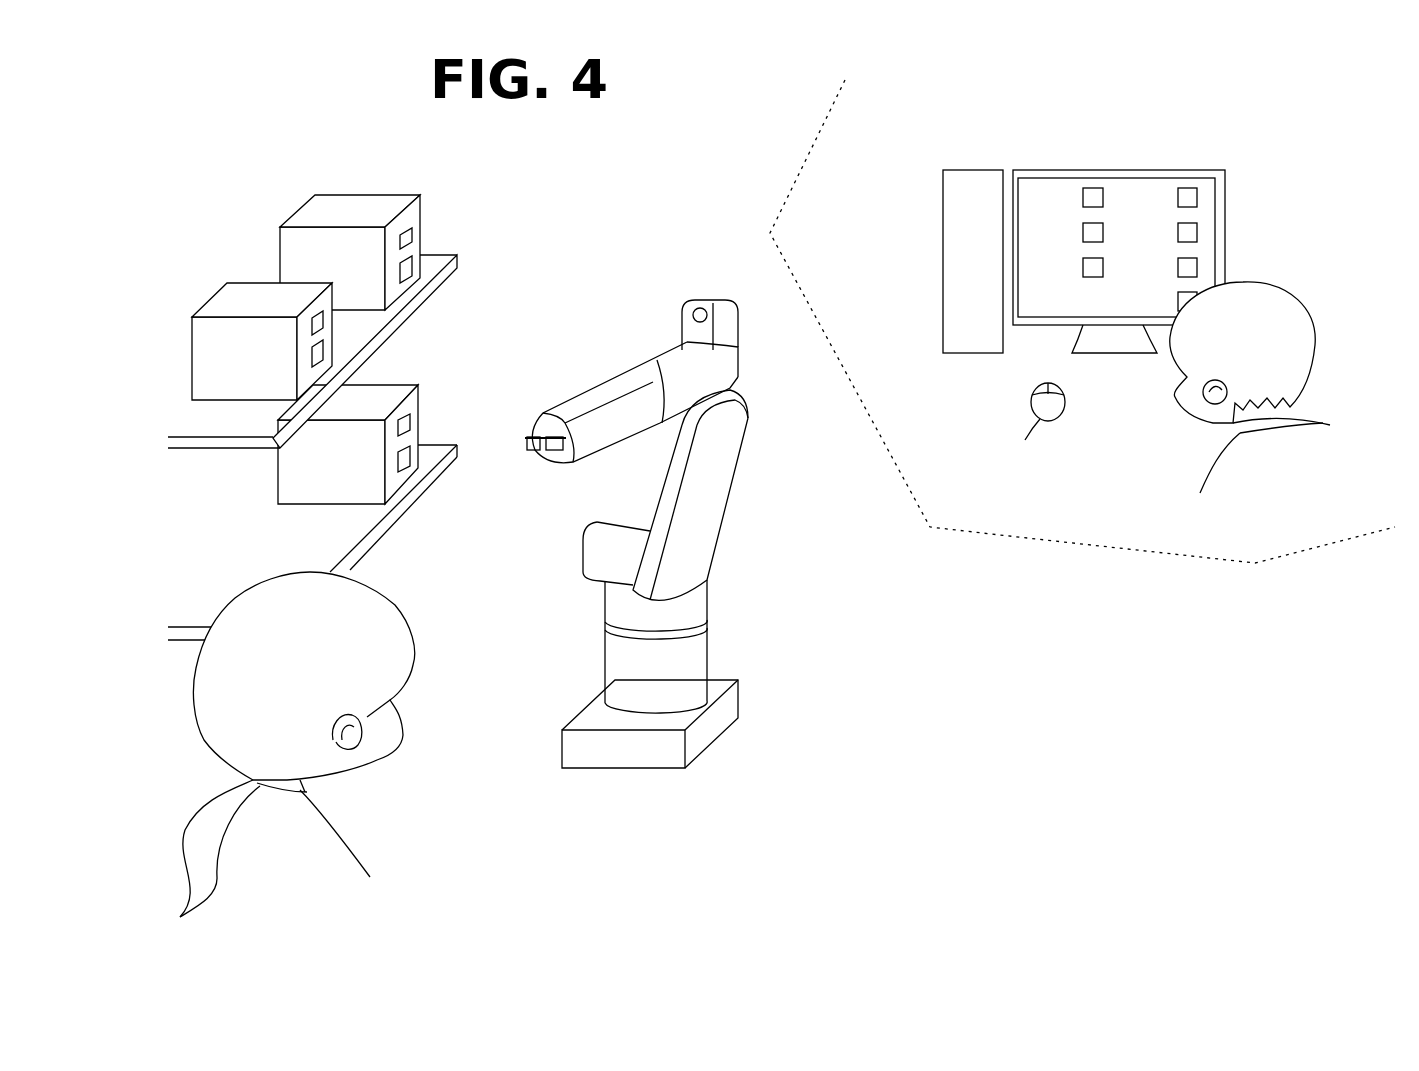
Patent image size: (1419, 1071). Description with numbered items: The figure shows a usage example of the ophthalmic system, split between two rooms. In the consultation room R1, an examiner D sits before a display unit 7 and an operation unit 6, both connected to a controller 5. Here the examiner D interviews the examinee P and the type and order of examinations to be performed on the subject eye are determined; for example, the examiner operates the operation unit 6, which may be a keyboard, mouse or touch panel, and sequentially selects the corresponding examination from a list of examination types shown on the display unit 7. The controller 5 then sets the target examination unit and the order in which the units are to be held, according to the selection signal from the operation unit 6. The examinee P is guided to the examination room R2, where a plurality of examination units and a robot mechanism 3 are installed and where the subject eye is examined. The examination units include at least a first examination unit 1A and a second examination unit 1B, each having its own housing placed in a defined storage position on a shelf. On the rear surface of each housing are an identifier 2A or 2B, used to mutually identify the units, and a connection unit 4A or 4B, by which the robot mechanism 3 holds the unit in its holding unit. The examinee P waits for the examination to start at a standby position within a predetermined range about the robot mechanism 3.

The first examination unit 1A is at (238, 287).
The second examination unit 1B is at (325, 200).
The identifier 2A is at (323, 353).
The identifier 2B is at (412, 268).
The connection unit 4A is at (312, 325).
The connection unit 4B is at (405, 237).
The robot mechanism 3 is at (592, 559).
The controller 5 is at (943, 248).
The operation unit 6 is at (1039, 431).
The display unit 7 is at (1227, 186).
The examiner D is at (1305, 340).
The examinee P is at (200, 723).
The consultation room R1 is at (815, 128).
The examination room R2 is at (855, 785).